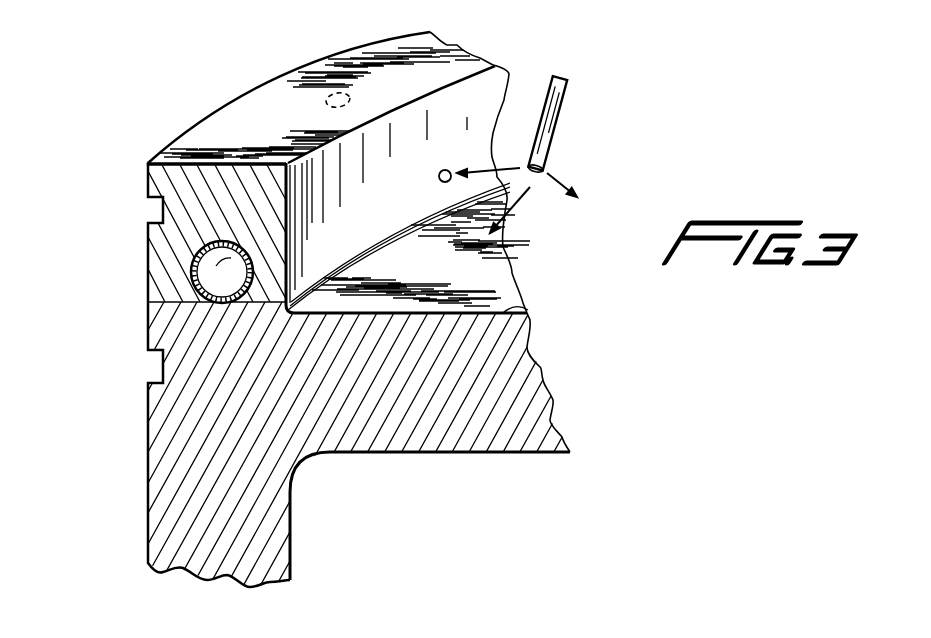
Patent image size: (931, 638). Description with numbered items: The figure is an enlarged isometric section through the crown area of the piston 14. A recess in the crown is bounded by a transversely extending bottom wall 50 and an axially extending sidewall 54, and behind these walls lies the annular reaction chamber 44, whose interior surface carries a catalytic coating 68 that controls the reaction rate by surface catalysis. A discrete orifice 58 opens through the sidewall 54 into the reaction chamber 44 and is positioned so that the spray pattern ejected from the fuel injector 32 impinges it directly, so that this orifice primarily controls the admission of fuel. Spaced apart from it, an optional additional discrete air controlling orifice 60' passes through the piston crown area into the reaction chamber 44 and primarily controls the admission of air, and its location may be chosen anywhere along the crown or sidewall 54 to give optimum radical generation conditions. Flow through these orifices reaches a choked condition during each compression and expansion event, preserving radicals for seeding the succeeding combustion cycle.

The piston 14 is at (147, 338).
The reaction chamber 44 is at (232, 240).
The catalytic coating 68 is at (193, 275).
The bottom wall 50 is at (528, 307).
The sidewall 54 is at (367, 219).
The discrete orifice 58 is at (445, 170).
The fuel injector 32 is at (555, 131).
The additional discrete air controlling orifice 60' is at (314, 54).